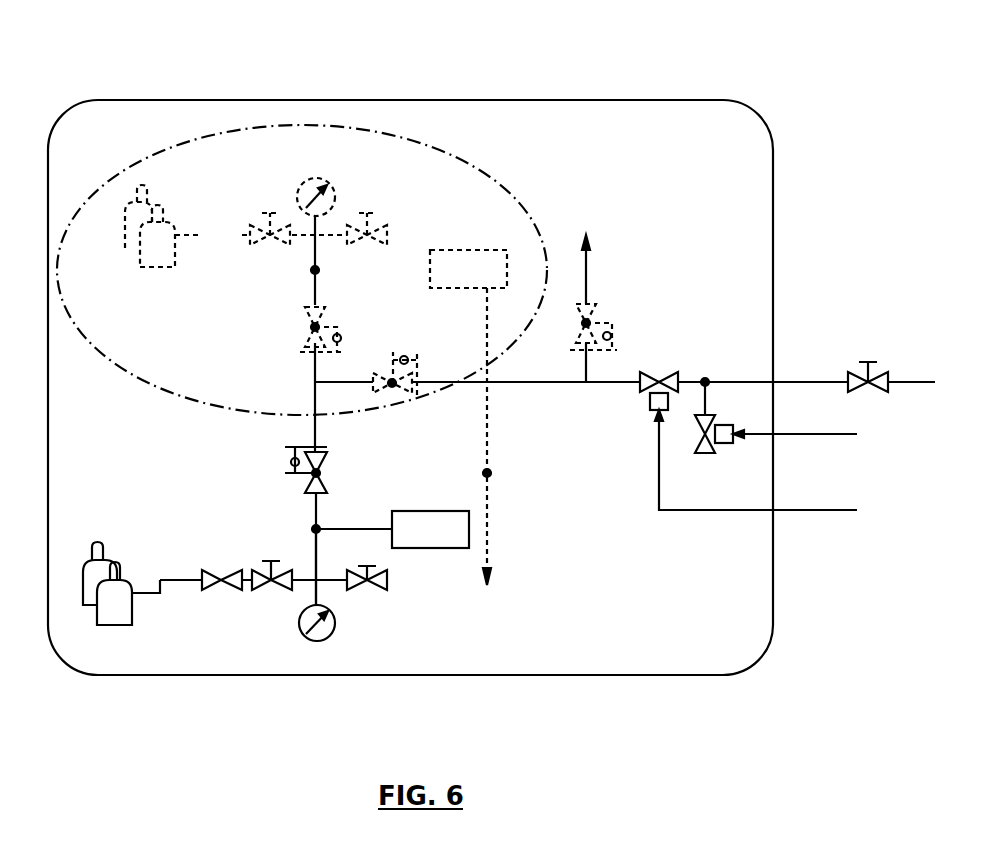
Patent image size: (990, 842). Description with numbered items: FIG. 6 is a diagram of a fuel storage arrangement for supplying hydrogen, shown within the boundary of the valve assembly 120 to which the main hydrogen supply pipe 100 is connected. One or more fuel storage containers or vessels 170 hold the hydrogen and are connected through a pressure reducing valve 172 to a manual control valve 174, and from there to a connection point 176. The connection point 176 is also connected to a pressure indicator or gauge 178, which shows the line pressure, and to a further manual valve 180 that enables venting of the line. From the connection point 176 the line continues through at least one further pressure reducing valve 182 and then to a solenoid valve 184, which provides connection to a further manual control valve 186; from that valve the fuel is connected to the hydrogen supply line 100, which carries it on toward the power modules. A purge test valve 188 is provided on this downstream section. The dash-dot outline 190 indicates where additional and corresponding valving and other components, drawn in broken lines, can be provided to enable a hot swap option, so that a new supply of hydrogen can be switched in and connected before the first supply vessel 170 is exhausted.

The hydrogen supply pipe 100 is at (936, 382).
The valve assembly 120 is at (451, 87).
The fuel storage container 170 is at (113, 618).
The pressure reducing valve 172 is at (213, 590).
The manual control valve 174 is at (262, 590).
The connection point 176 is at (313, 585).
The pressure gauge 178 is at (325, 642).
The manual valve 180 is at (373, 593).
The further pressure reducing valve 182 is at (305, 480).
The solenoid valve 184 is at (670, 375).
The further manual control valve 186 is at (883, 392).
The purge test valve 188 is at (733, 443).
The hot swap valving 190 is at (257, 127).